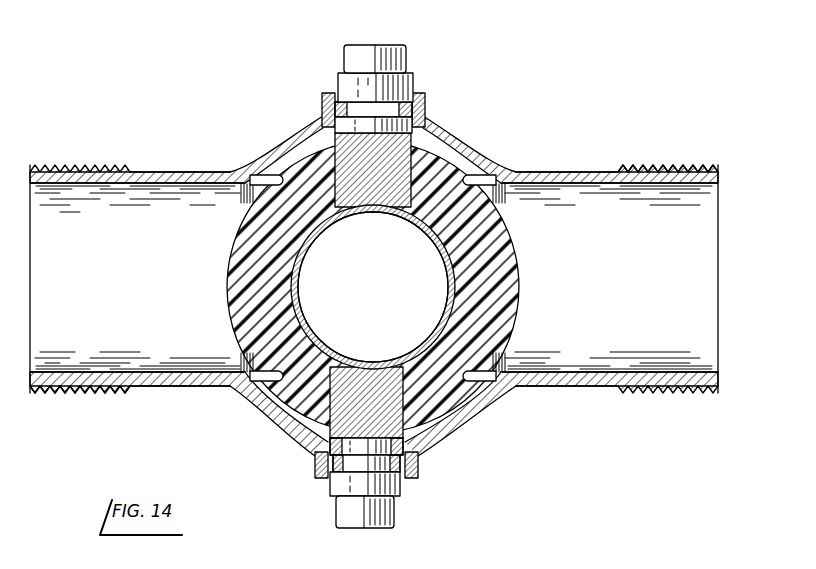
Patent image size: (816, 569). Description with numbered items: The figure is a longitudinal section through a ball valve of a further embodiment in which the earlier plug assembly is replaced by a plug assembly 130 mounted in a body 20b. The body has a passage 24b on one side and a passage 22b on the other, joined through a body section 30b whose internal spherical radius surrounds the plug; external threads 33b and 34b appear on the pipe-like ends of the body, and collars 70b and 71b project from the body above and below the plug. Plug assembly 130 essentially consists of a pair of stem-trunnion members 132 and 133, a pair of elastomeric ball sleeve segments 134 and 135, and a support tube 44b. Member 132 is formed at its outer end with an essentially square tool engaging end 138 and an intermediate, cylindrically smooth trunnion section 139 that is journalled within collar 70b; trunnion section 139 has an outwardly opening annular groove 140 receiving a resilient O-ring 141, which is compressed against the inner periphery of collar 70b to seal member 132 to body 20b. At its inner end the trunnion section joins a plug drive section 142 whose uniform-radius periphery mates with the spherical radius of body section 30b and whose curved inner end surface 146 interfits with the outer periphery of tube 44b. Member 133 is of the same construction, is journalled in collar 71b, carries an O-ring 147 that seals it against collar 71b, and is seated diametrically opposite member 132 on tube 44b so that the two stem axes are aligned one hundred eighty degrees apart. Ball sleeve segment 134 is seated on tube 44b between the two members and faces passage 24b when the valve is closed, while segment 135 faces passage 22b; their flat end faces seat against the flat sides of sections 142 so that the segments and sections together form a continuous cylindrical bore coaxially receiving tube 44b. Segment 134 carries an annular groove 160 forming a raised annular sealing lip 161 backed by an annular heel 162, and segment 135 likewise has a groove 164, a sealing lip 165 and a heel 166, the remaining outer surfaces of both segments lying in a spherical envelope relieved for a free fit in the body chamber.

The body 20b is at (396, 282).
The passage 22b is at (632, 274).
The passage 24b is at (137, 293).
The external threads on left body section 33b is at (80, 394).
The external threads on right body section 34b is at (706, 177).
The body section 30b is at (462, 426).
The collar 70b is at (376, 130).
The collar 71b is at (373, 427).
The plug assembly 130 is at (365, 287).
The ball sleeve segment 134 is at (229, 270).
The ball sleeve segment 135 is at (517, 291).
The support tube 44b is at (301, 312).
The inner end surface 146 is at (372, 208).
The stem-trunnion member 132 is at (402, 51).
The stem-trunnion member 133 is at (393, 518).
The tool engaging end 138 is at (404, 66).
The trunnion section 139 is at (340, 81).
The annular groove 140 is at (329, 120).
The O-ring 141 is at (426, 104).
The plug drive section 142 is at (426, 123).
The O-ring 147 is at (318, 467).
The annular groove 160 is at (250, 189).
The sealing lip 161 is at (262, 170).
The annular heel 162 is at (291, 141).
The annular groove 164 is at (500, 201).
The sealing lip 165 is at (482, 177).
The annular heel 166 is at (468, 150).